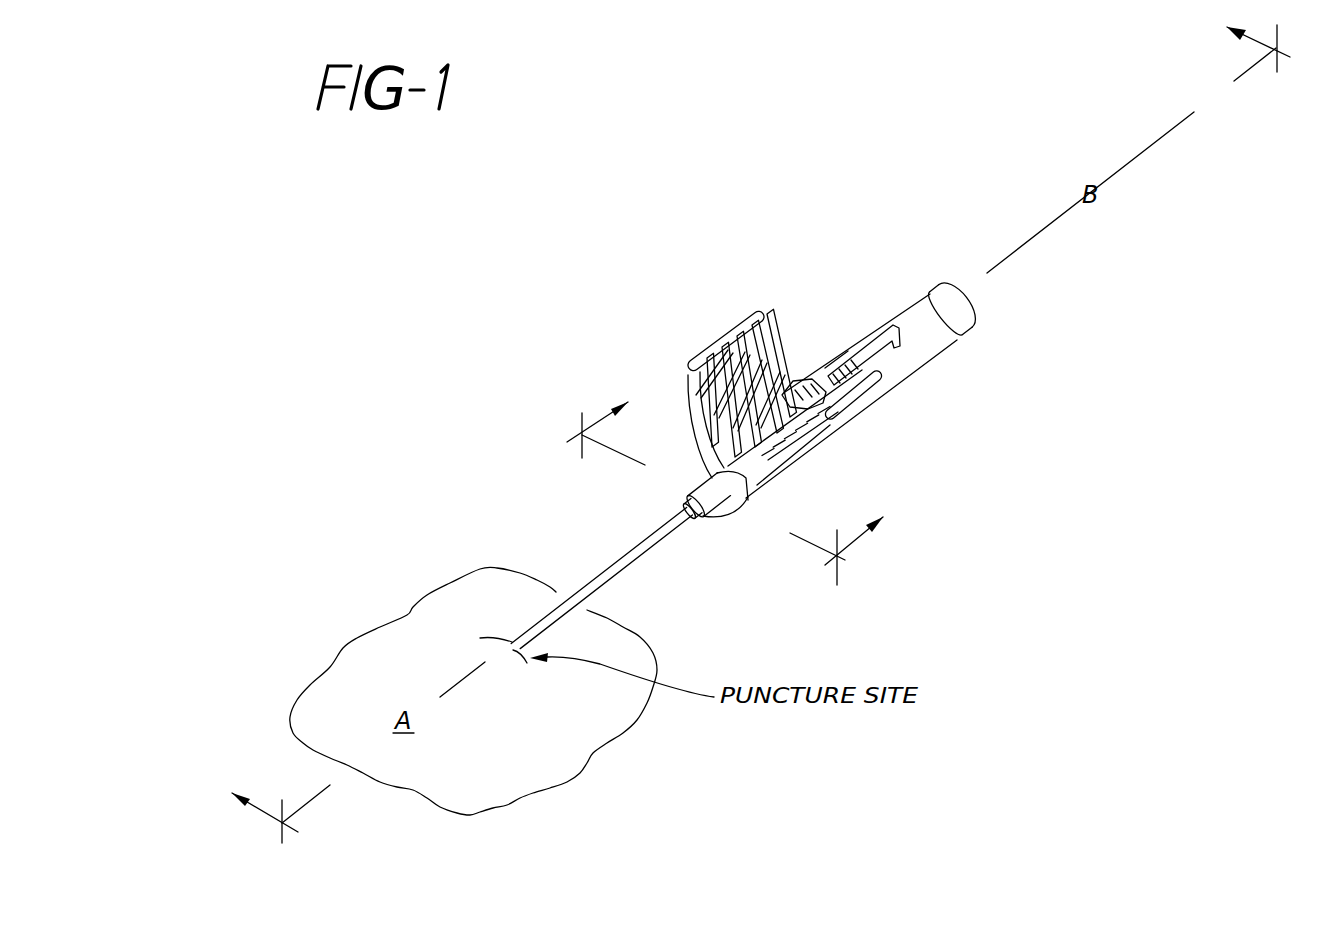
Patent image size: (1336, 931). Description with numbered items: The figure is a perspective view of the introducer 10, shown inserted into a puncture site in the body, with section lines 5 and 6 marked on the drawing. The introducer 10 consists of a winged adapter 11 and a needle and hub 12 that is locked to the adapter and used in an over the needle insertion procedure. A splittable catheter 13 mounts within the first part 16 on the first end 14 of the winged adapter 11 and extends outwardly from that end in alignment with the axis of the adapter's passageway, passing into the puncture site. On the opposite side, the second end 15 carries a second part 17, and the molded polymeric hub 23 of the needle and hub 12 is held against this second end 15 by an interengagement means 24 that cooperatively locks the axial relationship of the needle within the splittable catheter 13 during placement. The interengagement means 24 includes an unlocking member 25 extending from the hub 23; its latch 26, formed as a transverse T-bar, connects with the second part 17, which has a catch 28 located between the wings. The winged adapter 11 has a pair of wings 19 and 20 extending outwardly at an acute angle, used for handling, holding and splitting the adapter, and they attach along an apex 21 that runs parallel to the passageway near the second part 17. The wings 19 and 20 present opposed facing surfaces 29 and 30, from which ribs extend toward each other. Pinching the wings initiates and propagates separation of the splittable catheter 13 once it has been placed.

The section line 5- 5 is at (768, 436).
The section line 6- 6 is at (715, 493).
The introducer 10 is at (823, 282).
The winged adapter 11 is at (718, 352).
The needle and hub 12 is at (930, 350).
The splittable catheter 13 is at (603, 563).
The first end 14 is at (684, 503).
The second end 15 is at (972, 320).
The first part 16 is at (720, 522).
The second part 17 is at (938, 288).
The wing 19 is at (688, 363).
The wing 20 is at (815, 435).
The apex 21 is at (748, 420).
The hub 23 is at (953, 333).
The interengagement means 24 is at (847, 368).
The unlocking member 25 is at (815, 385).
The latch 26 is at (847, 398).
The catch 28 is at (778, 385).
The opposed facing surface 29 is at (742, 360).
The opposed facing surface 30 is at (752, 500).